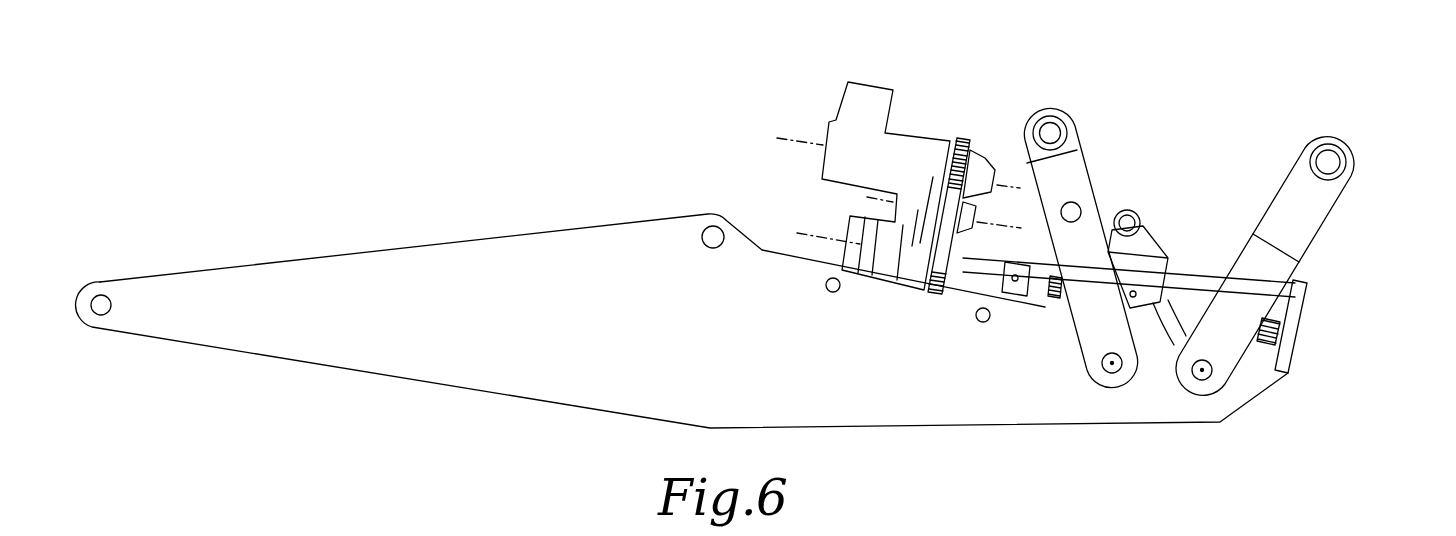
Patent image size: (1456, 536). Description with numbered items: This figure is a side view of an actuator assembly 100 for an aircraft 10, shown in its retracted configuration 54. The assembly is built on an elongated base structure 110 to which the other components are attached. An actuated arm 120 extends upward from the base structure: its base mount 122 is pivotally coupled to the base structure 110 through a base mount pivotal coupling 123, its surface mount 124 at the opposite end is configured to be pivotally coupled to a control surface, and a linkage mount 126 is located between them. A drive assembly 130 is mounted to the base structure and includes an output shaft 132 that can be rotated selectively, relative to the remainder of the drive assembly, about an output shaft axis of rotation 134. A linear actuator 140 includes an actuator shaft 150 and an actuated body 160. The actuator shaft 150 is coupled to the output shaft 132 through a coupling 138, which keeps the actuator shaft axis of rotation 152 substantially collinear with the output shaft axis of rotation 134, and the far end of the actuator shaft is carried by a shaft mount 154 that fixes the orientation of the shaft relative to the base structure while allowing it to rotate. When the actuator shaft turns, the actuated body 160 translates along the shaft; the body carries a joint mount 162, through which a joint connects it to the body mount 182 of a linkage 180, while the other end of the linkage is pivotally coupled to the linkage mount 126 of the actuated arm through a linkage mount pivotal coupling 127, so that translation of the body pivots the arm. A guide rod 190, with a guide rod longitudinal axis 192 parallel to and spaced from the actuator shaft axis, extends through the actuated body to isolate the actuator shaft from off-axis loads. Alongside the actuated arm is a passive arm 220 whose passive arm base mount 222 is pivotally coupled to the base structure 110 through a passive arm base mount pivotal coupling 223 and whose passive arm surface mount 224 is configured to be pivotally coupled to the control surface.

The aircraft 10 is at (186, 105).
The actuator assembly 100 is at (176, 156).
The retracted configuration 54 is at (1256, 98).
The base structure 110 is at (424, 388).
The actuated arm 120 is at (1094, 166).
The base mount 122 is at (1112, 366).
The base mount pivotal coupling 123 is at (1112, 366).
The surface mount 124 is at (1027, 128).
The linkage mount 126 is at (1082, 207).
The linkage mount pivotal coupling 127 is at (1040, 205).
The drive assembly 130 is at (839, 92).
The output shaft 132 is at (973, 286).
The output shaft axis of rotation 134 is at (811, 236).
The coupling 138 is at (1007, 302).
The linear actuator 140 is at (1222, 195).
The actuator shaft 150 is at (1173, 328).
The actuator shaft axis of rotation 152 is at (1308, 335).
The shaft mount 154 is at (1290, 352).
The actuated body 160 is at (1164, 245).
The joint mount 162 is at (1131, 210).
The linkage 180 is at (1103, 238).
The body mount 182 is at (1102, 366).
The guide rod 190 is at (1240, 242).
The guide rod longitudinal axis 192 is at (1303, 303).
The passive arm 220 is at (1325, 235).
The passive arm base mount 222 is at (1212, 372).
The passive arm base mount pivotal coupling 223 is at (1205, 380).
The passive arm surface mount 224 is at (1352, 163).